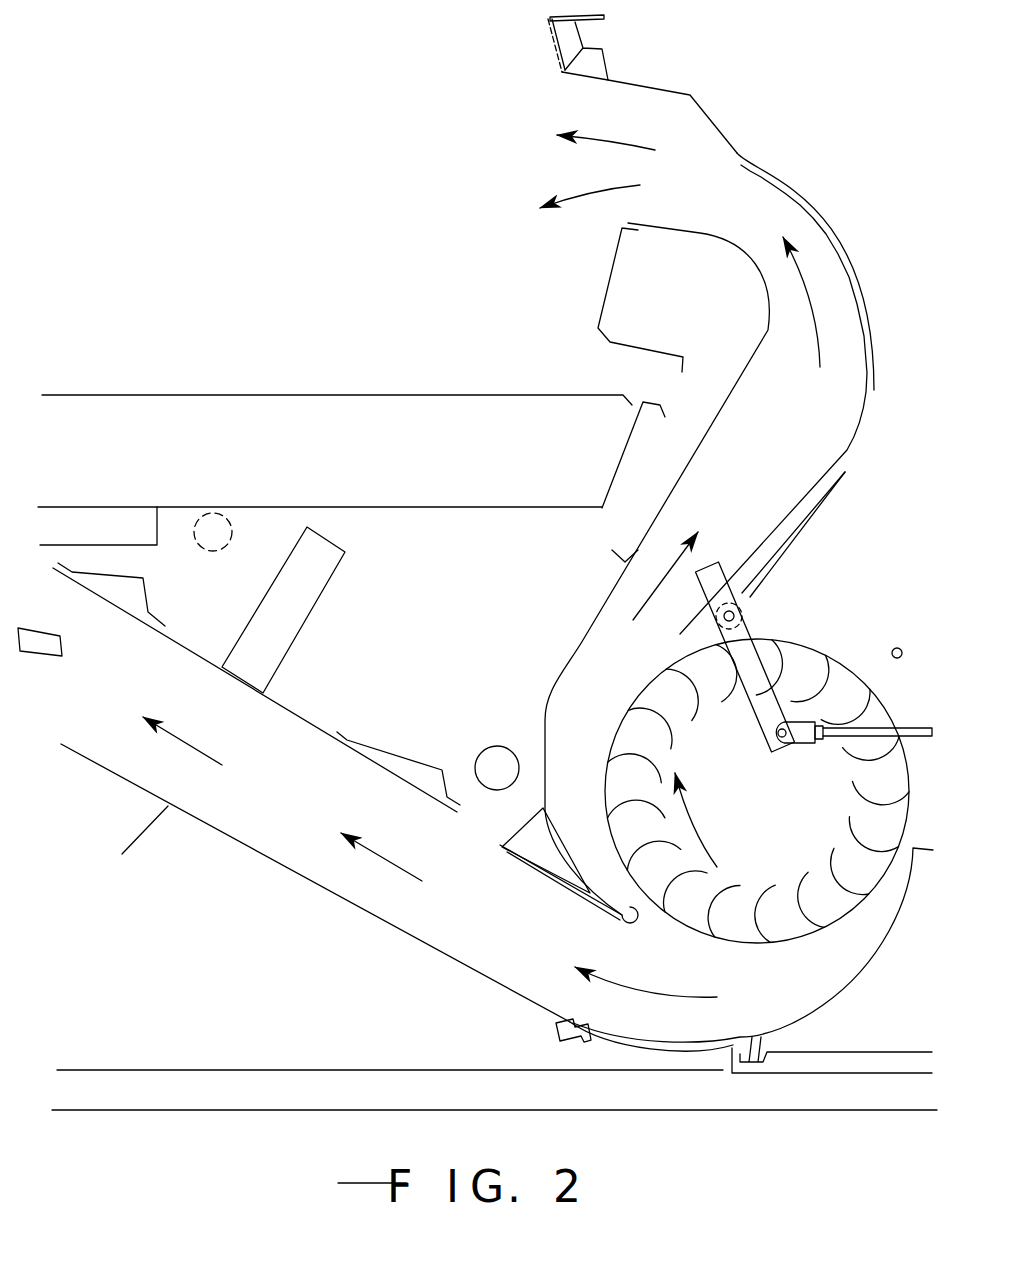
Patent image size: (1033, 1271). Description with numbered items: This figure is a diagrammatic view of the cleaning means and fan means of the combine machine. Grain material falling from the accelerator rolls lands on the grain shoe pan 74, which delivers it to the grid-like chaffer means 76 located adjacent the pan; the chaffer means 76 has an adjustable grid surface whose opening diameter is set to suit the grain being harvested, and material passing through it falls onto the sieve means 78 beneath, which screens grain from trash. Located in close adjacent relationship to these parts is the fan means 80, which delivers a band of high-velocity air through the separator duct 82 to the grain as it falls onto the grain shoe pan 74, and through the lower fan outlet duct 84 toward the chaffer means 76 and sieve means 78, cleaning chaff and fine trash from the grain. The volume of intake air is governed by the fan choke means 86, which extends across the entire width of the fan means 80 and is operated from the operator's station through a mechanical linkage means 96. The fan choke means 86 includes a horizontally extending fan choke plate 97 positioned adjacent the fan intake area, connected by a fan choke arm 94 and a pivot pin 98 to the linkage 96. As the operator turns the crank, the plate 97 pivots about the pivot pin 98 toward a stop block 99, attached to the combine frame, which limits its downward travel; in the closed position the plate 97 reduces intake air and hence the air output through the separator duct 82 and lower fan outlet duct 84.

The grain shoe pan 74 is at (437, 507).
The grid-like chaffer means 76 is at (85, 545).
The sieve means 78 is at (43, 657).
The fan means 80 is at (902, 918).
The separator duct 82 is at (783, 193).
The lower fan outlet duct 84 is at (396, 937).
The fan choke means 86 is at (812, 528).
The fan choke arm 94 is at (742, 618).
The mechanical linkage means 96 is at (910, 728).
The fan choke plate 97 is at (785, 558).
The pivot pin 98 is at (788, 747).
The stop block 99 is at (899, 648).